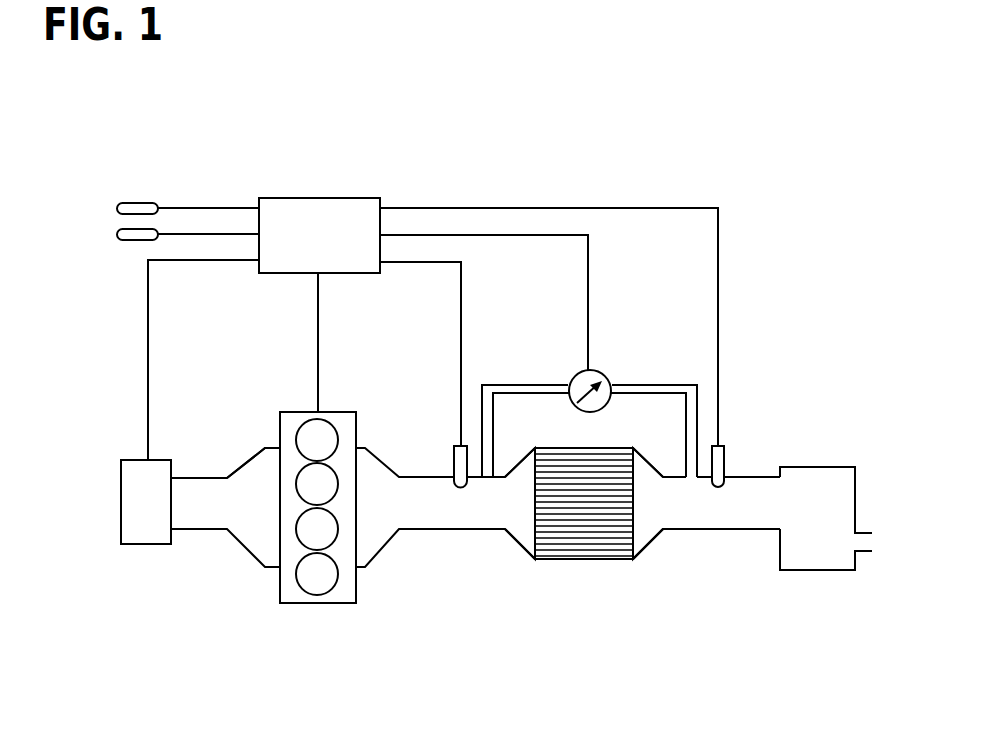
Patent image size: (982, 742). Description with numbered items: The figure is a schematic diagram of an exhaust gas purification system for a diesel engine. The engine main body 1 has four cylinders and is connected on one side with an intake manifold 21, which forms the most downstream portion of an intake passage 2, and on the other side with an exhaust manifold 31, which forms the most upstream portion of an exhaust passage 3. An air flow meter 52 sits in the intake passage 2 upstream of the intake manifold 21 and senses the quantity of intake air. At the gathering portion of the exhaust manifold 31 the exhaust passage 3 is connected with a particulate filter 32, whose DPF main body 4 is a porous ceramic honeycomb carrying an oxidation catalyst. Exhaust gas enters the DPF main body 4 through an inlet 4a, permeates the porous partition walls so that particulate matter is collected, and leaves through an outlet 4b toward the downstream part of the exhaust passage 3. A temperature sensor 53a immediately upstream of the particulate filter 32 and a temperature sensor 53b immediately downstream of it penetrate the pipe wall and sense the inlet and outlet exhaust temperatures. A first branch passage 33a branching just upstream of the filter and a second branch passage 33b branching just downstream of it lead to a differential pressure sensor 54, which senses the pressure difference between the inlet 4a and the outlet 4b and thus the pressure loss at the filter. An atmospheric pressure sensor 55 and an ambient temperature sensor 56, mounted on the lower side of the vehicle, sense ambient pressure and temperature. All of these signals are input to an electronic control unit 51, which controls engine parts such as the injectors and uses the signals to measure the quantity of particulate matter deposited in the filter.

The engine main body 1 is at (320, 605).
The intake passage 2 is at (224, 452).
The intake manifold 21 is at (257, 468).
The exhaust passage 3 is at (441, 558).
The exhaust manifold 31 is at (370, 468).
The particulate filter 32 is at (642, 576).
The first branch passage 33a is at (510, 380).
The second branch passage 33b is at (672, 380).
The DPF main body 4 is at (590, 543).
The inlet 4a is at (535, 510).
The outlet 4b is at (633, 503).
The electronic control unit 51 is at (317, 198).
The air flow meter 52 is at (143, 545).
The temperature sensor 53a is at (452, 440).
The temperature sensor 53b is at (730, 458).
The differential pressure sensor 54 is at (600, 370).
The atmospheric pressure sensor 55 is at (137, 203).
The ambient temperature sensor 56 is at (130, 240).